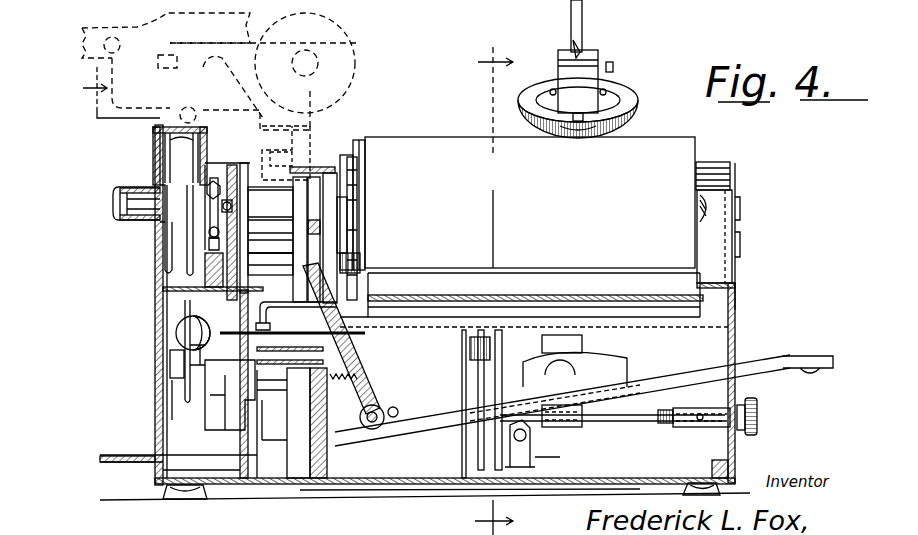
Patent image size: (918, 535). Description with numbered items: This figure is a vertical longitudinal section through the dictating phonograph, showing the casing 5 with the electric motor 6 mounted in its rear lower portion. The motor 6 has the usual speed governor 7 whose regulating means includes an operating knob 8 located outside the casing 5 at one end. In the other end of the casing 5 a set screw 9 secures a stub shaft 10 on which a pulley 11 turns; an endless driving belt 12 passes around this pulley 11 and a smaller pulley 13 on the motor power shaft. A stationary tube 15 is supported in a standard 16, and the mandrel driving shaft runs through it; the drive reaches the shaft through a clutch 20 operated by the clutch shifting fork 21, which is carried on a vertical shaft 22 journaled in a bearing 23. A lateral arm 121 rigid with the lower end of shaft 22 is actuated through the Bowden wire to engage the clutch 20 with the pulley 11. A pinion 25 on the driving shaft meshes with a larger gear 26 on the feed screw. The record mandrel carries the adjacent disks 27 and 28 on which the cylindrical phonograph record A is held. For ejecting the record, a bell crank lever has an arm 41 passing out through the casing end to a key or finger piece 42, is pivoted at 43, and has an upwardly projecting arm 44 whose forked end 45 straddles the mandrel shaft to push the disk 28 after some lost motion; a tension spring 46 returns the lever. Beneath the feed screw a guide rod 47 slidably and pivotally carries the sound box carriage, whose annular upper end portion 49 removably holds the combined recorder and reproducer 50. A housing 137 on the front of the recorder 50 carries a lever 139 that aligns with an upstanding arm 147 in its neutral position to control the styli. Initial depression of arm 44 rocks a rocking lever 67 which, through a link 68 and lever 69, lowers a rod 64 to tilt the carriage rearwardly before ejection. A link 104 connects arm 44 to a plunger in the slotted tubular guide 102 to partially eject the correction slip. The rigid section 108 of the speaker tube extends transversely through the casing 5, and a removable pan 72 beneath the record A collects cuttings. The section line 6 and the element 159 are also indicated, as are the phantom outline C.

The casing 5 is at (156, 364).
The electric motor 6 is at (475, 277).
The speed governor 7 is at (570, 356).
The operating knob 8 is at (760, 416).
The set screw 9 is at (137, 184).
The stub shaft 10 is at (120, 203).
The pulley 11 is at (158, 148).
The endless driving belt 12 is at (178, 245).
The smaller pulley 13 is at (157, 400).
The stationary tube 15 is at (280, 178).
The standard 16 is at (340, 170).
The clutch 20 is at (212, 168).
The clutch shifting fork 21 is at (228, 195).
The vertical shaft 22 is at (165, 302).
The bearing 23 is at (205, 266).
The pinion 25 is at (255, 218).
The gear 26 is at (250, 250).
The disk 27 is at (362, 142).
The disk 28 is at (355, 150).
The arm 41 is at (437, 420).
The key or finger piece 42 is at (815, 350).
The pivot 43 is at (371, 430).
The arm 44 is at (350, 262).
The forked end 45 is at (352, 200).
The tension spring 46 is at (370, 384).
The guide rod 47 is at (268, 272).
The annular upper end portion 49 is at (634, 112).
The combined recorder and reproducer 50 is at (631, 81).
The rod 64 is at (512, 338).
The rocking lever 67 is at (687, 397).
The link 68 is at (533, 447).
The lever 69 is at (555, 462).
The pan 72 is at (432, 281).
The tubular guide 102 is at (345, 338).
The link 104 is at (262, 292).
The rigid section 108 is at (177, 333).
The lateral arm 121 is at (212, 365).
The housing 137 is at (597, 50).
The lever 139 is at (583, 7).
The upstanding arm 147 is at (568, 27).
The foot 159 is at (172, 497).
The cylindrical phonograph record A is at (530, 202).
The ribbon cassette C is at (325, 50).